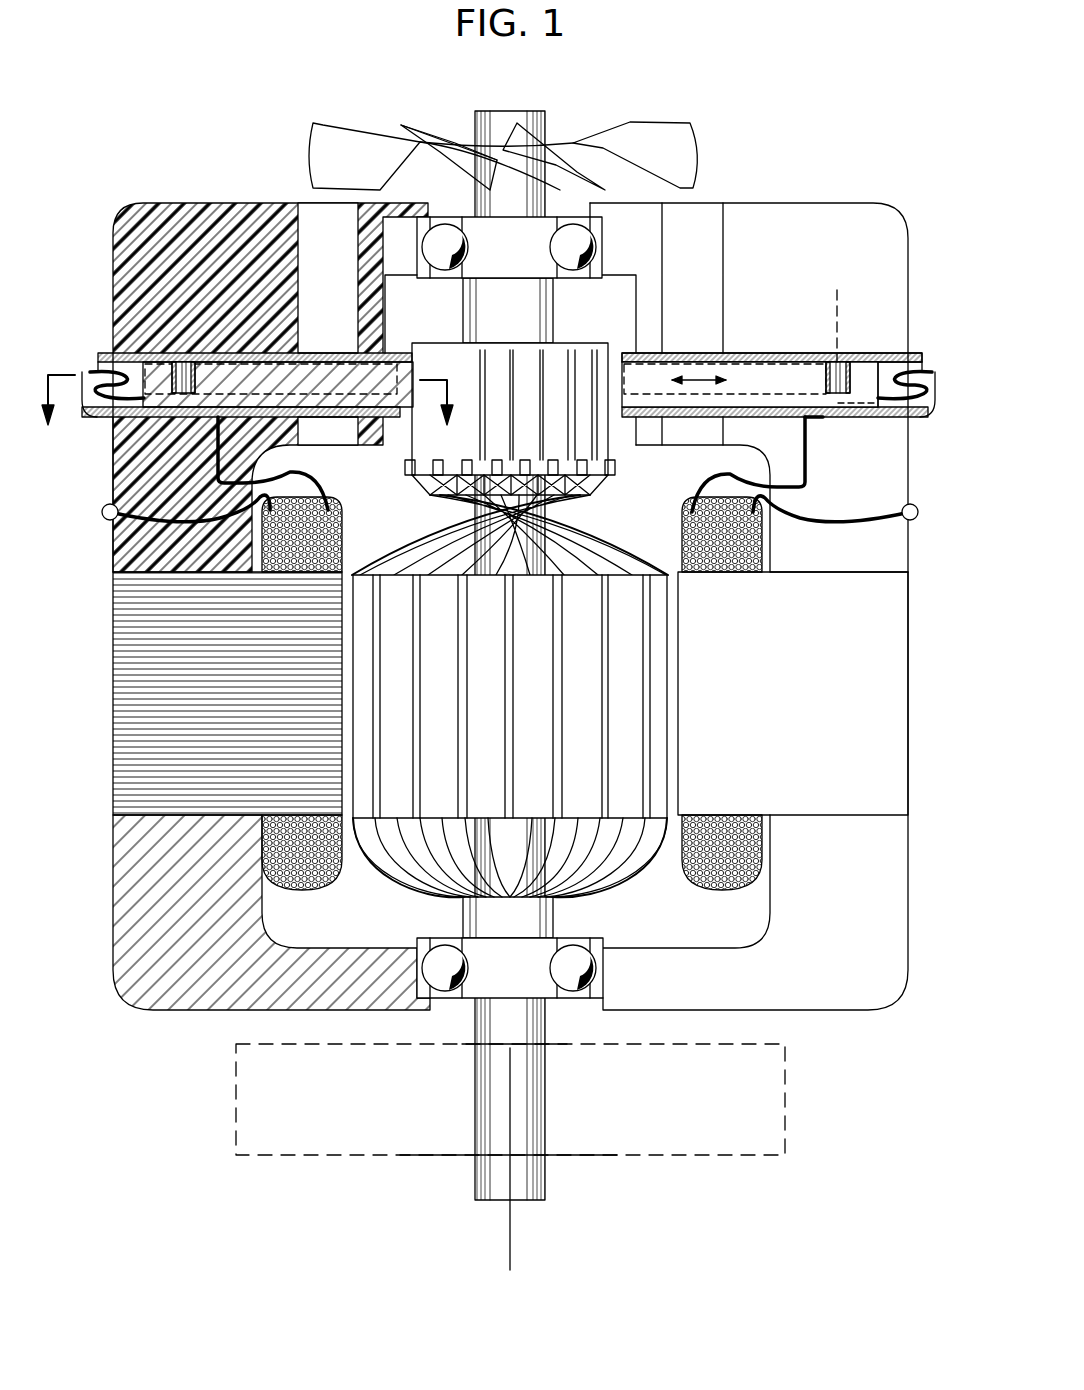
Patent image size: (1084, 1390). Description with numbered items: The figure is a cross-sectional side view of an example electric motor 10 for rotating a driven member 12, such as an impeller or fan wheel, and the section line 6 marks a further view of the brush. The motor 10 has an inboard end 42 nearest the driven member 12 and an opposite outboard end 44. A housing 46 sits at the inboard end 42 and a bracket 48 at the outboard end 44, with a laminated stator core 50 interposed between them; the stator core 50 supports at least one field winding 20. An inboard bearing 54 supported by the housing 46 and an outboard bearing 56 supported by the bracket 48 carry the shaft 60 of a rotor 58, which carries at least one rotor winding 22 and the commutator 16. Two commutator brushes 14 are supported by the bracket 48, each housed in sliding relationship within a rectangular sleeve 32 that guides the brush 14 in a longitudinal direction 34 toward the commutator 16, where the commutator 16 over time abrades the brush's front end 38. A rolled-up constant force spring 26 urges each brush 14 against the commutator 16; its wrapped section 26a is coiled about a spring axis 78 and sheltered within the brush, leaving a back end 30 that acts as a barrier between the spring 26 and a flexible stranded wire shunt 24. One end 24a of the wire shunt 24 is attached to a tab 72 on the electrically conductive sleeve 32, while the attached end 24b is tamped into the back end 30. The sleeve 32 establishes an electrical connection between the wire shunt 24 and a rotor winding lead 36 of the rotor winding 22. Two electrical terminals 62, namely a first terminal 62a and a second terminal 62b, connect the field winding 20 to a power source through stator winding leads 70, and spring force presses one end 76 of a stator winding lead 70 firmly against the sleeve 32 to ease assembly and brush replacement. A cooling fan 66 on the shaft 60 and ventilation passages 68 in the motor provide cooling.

The electric motor 10 is at (125, 125).
The driven member 12 is at (262, 1165).
The commutator brush 14 is at (509, 384).
The commutator 16 is at (608, 452).
The field winding 20 is at (765, 549).
The rotor winding 22 is at (620, 860).
The wire shunt 24 is at (490, 369).
The end of wire shunt 24a is at (928, 385).
The attached end of wire shunt 24b is at (875, 410).
The rolled-up spring 26 is at (826, 380).
The wrapped section 26a is at (840, 368).
The back end 30 is at (862, 380).
The rectangular sleeve 32 is at (740, 352).
The longitudinal direction 34 is at (700, 372).
The rotor winding lead 36 is at (562, 505).
The front end 38 is at (590, 350).
The inboard end 42 is at (925, 1000).
The outboard end 44 is at (918, 217).
The housing 46 is at (113, 905).
The bracket 48 is at (113, 240).
The laminated stator core 50 is at (113, 730).
The inboard bearing 54 is at (603, 981).
The outboard bearing 56 is at (602, 246).
The rotor 58 is at (667, 706).
The shaft 60 is at (497, 111).
The electrical terminals 62 is at (500, 535).
The first terminal 62a is at (108, 521).
The second terminal 62b is at (913, 521).
The cooling fan 66 is at (700, 150).
The ventilation passages 68 is at (752, 182).
The stator winding lead 70 is at (300, 480).
The tab 72 is at (935, 410).
The end of stator winding lead 76 is at (822, 418).
The spring axis 78 is at (837, 292).
The section line 6- 6 is at (247, 414).